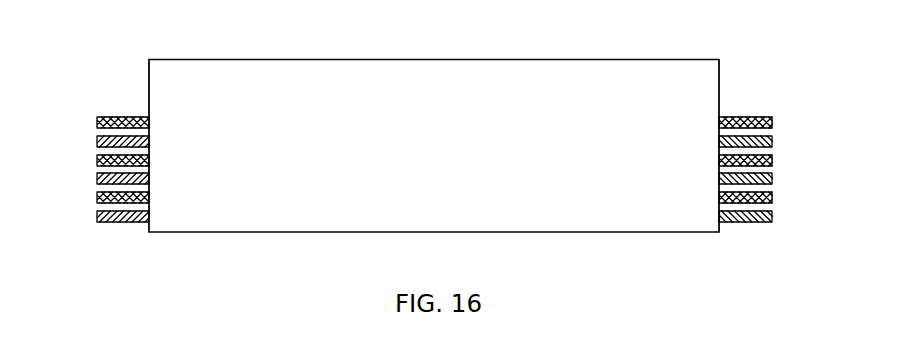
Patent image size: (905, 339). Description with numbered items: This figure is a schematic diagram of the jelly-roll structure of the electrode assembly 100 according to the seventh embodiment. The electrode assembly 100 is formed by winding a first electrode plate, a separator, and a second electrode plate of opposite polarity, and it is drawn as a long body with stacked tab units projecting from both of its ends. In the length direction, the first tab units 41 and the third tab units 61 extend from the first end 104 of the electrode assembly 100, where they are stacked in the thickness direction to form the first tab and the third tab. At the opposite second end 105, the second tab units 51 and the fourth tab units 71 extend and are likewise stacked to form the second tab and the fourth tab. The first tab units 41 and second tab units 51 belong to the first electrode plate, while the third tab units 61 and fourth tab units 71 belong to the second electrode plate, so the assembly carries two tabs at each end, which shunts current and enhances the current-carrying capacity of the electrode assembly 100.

The electrode assembly 100 is at (567, 45).
The first end 104 is at (720, 84).
The second end 105 is at (150, 88).
The fourth tab units 71 is at (97, 117).
The second tab units 51 is at (97, 138).
The third tab units 61 is at (758, 117).
The first tab units 41 is at (773, 139).